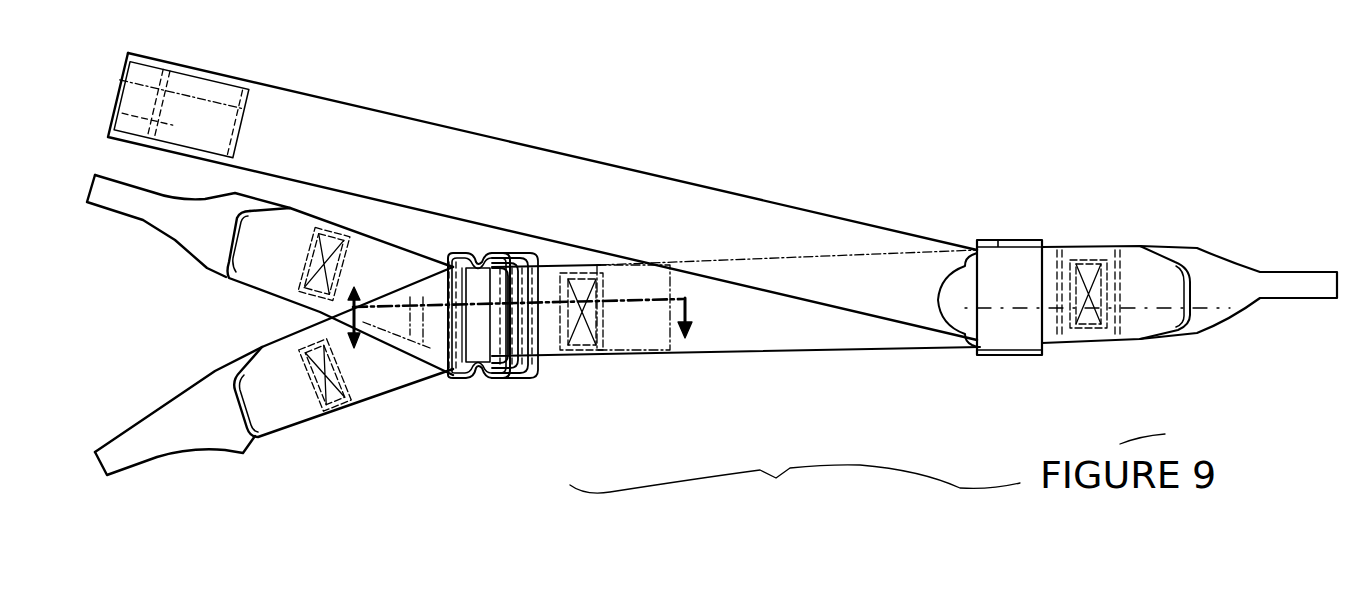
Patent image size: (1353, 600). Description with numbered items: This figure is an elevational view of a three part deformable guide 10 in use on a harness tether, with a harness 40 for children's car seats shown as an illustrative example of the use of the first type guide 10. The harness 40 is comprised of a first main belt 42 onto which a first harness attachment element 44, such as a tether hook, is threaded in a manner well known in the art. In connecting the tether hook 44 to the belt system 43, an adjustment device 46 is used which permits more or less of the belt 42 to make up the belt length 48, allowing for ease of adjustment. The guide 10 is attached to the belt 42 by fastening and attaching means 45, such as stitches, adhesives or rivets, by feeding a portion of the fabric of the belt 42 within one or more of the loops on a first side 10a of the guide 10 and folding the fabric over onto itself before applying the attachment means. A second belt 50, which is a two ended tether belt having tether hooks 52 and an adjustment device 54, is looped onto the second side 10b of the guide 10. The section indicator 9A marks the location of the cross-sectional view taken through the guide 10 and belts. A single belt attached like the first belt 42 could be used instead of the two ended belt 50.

The guide 10 is at (497, 383).
The first side of guide 10a is at (513, 383).
The second side of guide 10b is at (452, 247).
The harness 40 is at (773, 188).
The first main belt 42 is at (552, 185).
The belt system 43 is at (887, 205).
The first harness attachment element 44 is at (1243, 280).
The fastening and attaching means 45 is at (590, 348).
The adjustment device 46 is at (1012, 345).
The belt length 48 is at (756, 437).
The second belt 50 is at (375, 377).
The tether hooks 52 is at (178, 230).
The adjustment device 54 is at (460, 382).
The section line 9A- 9A is at (517, 315).